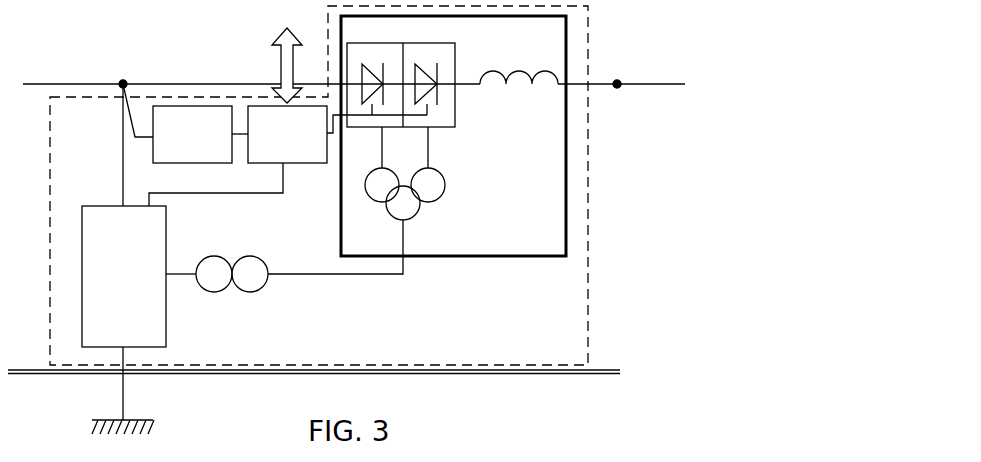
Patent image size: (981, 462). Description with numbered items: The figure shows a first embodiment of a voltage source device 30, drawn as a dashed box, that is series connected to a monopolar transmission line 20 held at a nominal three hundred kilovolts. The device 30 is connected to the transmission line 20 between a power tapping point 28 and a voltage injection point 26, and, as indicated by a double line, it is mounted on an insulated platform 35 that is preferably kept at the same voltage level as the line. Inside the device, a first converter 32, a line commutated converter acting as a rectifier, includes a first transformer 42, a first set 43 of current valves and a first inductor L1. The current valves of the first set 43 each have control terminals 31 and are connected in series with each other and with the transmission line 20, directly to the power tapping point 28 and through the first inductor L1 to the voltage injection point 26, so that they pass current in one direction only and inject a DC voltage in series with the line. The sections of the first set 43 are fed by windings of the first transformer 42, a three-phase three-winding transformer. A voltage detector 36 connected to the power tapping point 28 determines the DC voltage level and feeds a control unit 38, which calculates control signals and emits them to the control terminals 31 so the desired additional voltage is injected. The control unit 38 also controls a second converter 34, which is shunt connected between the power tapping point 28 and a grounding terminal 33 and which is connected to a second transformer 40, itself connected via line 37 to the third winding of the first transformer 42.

The transmission line 20 is at (180, 84).
The power tapping point 28 is at (123, 84).
The voltage injection point 26 is at (617, 84).
The voltage source device 30 is at (636, 225).
The first converter 32 is at (499, 256).
The first set of current valves 43 is at (401, 72).
The control terminals 31 is at (372, 105).
The first inductor L1 is at (519, 62).
The first transformer 42 is at (396, 183).
The line 37 is at (302, 276).
The second transformer 40 is at (217, 254).
The second converter 34 is at (124, 276).
The voltage detector 36 is at (200, 134).
The control unit 38 is at (238, 156).
The grounding terminal 33 is at (130, 390).
The insulated platform 35 is at (587, 372).